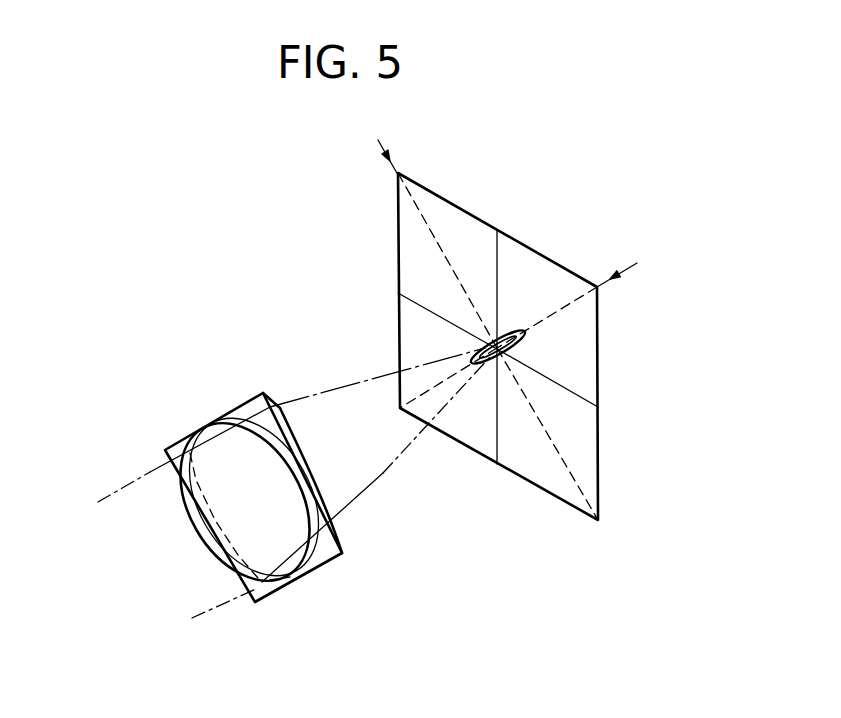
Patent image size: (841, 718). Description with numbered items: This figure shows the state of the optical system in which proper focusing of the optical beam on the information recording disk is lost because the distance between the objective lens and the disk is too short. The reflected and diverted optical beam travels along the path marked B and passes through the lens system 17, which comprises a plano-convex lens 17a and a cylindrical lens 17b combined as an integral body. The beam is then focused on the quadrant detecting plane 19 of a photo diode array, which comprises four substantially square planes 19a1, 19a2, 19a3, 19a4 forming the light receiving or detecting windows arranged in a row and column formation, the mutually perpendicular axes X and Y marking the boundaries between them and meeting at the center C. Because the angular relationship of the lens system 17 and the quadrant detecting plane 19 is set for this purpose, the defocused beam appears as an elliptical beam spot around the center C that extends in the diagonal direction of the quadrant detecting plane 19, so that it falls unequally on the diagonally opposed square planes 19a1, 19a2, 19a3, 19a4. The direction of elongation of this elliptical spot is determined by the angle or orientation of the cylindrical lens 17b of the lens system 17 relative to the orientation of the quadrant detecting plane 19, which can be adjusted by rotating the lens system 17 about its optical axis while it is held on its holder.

The lens system 17 is at (230, 400).
The plano-convex lens 17a is at (203, 423).
The cylindrical lens 17b is at (279, 405).
The quadrant detecting plane 19 is at (518, 240).
The square plane 19a1 is at (600, 345).
The square plane 19a2 is at (598, 487).
The square plane 19a3 is at (475, 438).
The square plane 19a4 is at (410, 252).
The center of light receiving element (beam spot) C is at (519, 345).
The optical axis / light beam B is at (125, 485).
The X axis X is at (626, 267).
The Y axis Y is at (388, 151).